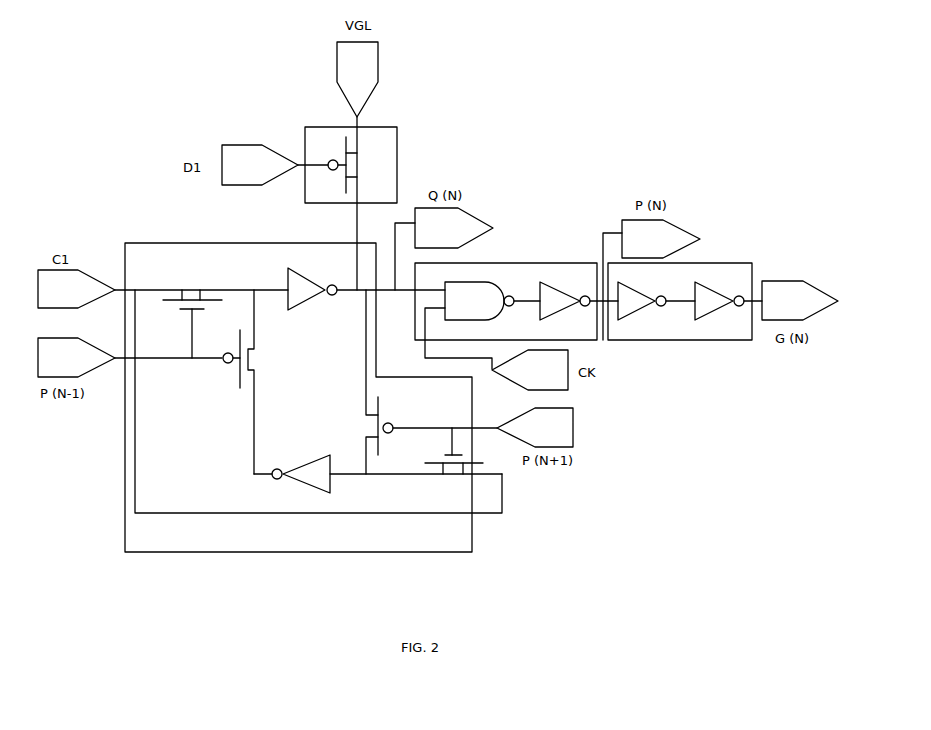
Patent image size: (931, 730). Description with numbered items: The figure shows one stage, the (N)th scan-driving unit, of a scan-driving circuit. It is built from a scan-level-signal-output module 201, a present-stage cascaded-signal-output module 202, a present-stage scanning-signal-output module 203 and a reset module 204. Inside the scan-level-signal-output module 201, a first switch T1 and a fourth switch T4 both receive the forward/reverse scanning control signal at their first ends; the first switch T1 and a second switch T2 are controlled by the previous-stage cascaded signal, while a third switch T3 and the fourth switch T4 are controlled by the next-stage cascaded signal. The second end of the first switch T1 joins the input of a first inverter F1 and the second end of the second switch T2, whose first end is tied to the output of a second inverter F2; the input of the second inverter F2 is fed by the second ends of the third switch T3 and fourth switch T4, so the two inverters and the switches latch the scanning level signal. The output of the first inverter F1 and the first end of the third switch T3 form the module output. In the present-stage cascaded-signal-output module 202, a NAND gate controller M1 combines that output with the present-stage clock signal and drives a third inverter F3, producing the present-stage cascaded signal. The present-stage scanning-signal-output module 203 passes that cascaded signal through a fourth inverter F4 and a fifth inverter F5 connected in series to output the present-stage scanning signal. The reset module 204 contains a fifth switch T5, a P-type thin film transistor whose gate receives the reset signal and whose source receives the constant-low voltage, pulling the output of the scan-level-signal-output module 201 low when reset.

The scan-level-signal-output module 201 is at (313, 423).
The present-stage cascaded-signal-output module 202 is at (516, 298).
The present-stage scanning-signal-output module 203 is at (685, 327).
The reset module 204 is at (385, 203).
The first switch T1 is at (192, 314).
The second switch T2 is at (248, 382).
The third switch T3 is at (421, 382).
The fourth switch T4 is at (454, 460).
The fifth switch T5 is at (352, 203).
The first inverter F1 is at (366, 298).
The second inverter F2 is at (378, 481).
The third inverter F3 is at (579, 293).
The fourth inverter F4 is at (656, 293).
The fifth inverter F5 is at (728, 293).
The NAND gate controller M1 is at (482, 325).